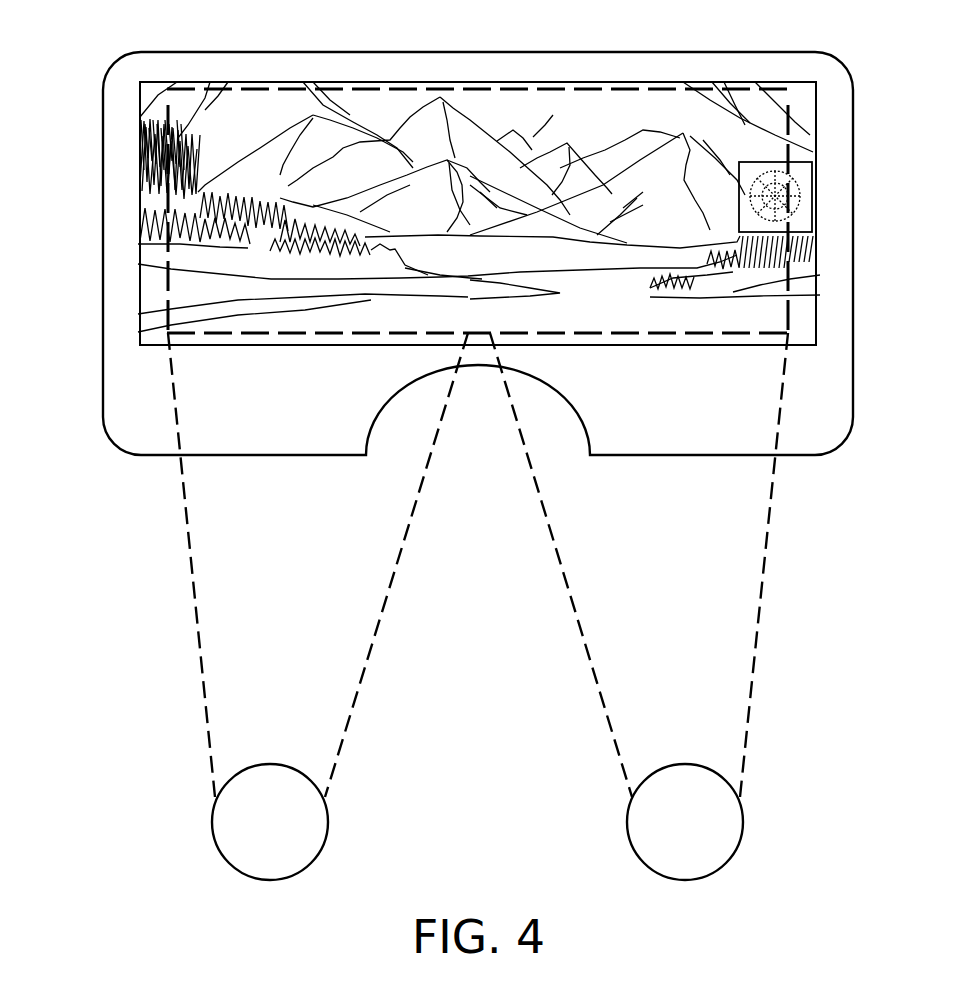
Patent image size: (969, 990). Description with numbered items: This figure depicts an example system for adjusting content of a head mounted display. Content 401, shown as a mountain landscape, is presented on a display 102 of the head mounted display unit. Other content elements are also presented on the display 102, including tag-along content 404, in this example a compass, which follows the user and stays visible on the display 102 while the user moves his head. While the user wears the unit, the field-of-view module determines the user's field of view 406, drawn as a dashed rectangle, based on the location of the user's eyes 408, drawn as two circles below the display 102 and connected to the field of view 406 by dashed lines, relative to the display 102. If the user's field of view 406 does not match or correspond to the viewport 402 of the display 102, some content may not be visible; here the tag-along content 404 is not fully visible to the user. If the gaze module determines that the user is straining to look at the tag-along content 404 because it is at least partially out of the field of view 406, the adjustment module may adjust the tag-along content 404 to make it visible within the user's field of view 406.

The display 102 is at (107, 118).
The content 401 is at (536, 121).
The viewport 402 is at (140, 172).
The tag-along content 404 is at (808, 224).
The field of view 406 is at (168, 258).
The eyes 408 is at (213, 826).